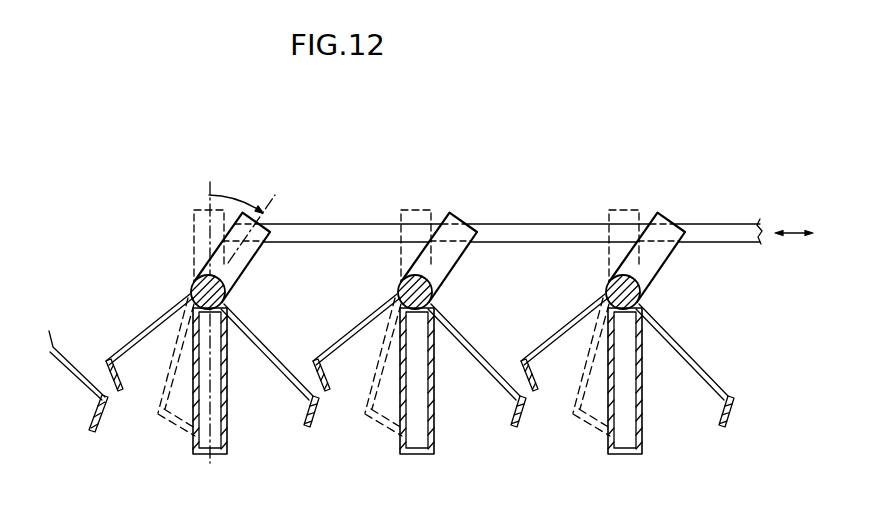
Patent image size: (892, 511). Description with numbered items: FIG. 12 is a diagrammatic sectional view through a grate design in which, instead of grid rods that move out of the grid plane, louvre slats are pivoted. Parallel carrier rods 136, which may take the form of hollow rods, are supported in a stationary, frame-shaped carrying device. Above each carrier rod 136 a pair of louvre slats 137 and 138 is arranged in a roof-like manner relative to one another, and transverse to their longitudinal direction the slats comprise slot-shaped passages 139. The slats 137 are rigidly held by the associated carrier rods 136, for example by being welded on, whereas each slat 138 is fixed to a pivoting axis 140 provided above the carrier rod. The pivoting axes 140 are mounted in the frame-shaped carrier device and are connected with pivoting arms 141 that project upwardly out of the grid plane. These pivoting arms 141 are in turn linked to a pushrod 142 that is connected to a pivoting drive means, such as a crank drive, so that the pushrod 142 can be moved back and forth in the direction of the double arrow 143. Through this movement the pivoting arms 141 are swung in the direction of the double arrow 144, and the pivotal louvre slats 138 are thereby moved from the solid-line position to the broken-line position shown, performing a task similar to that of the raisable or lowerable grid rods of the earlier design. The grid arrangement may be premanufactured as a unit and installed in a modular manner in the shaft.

The carrier rod 136 is at (211, 438).
The louvre slat 137 is at (287, 358).
The pivotal louvre slat 138 is at (147, 309).
The slot-shaped passage 139 is at (571, 313).
The pivoting axis 140 is at (397, 287).
The pivoting arm 141 is at (256, 223).
The pushrod 142 is at (710, 233).
The double arrow 143 is at (795, 237).
The double arrow 144 is at (232, 196).